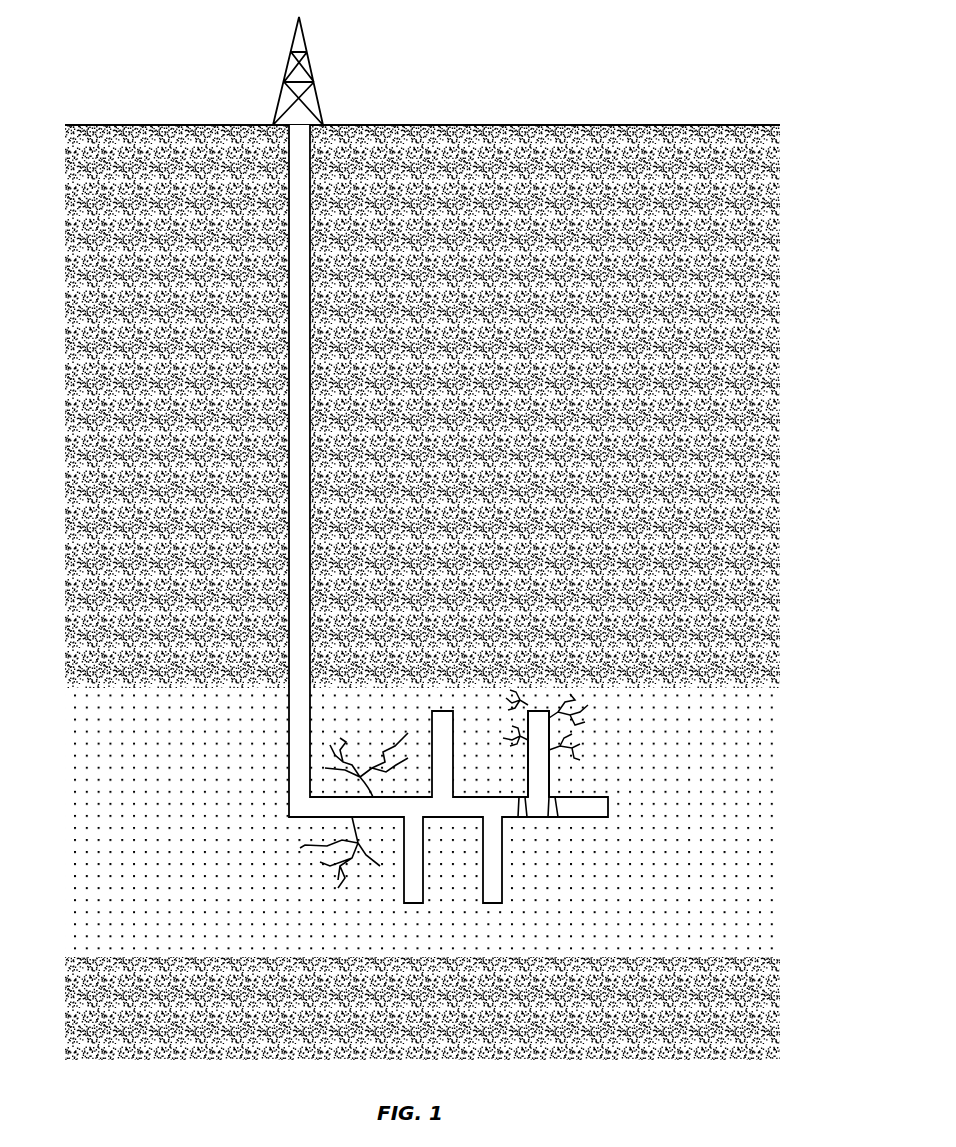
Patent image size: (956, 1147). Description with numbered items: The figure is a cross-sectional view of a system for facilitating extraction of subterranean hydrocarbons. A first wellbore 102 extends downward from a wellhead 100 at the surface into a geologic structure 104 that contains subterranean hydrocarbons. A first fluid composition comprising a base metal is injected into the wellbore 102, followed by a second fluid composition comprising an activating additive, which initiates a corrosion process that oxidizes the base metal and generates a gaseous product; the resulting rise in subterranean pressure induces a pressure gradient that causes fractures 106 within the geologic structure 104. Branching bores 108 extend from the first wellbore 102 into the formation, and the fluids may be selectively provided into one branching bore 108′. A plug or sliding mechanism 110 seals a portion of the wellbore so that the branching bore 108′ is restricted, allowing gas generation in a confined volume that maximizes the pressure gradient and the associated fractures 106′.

The wellhead 100 is at (312, 64).
The first wellbore 102 is at (289, 458).
The geologic structure 104 is at (320, 862).
The fractures 106 is at (337, 763).
The fractures 106′ is at (573, 700).
The branching bores 108 is at (443, 941).
The branching bore 108′ is at (552, 783).
The plug or sliding mechanism 110 is at (525, 808).